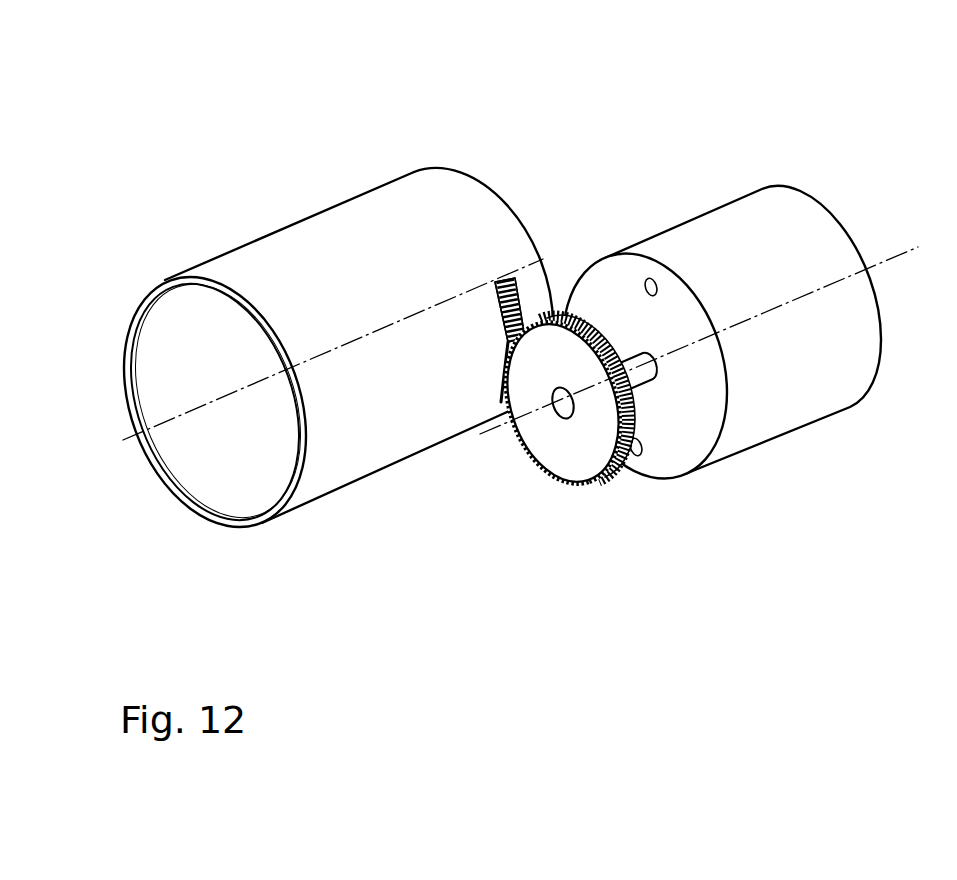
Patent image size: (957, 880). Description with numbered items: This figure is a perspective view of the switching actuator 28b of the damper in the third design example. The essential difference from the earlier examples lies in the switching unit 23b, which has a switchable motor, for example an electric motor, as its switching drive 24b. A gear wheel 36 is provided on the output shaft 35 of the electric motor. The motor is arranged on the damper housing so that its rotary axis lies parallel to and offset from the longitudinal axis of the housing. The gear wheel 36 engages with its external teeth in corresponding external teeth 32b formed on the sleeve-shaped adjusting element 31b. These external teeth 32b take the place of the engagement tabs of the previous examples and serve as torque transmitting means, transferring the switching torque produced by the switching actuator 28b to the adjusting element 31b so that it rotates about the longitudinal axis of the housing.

The switching actuator 28b is at (297, 177).
The adjusting element 31b is at (222, 263).
The external teeth 32b is at (500, 280).
The gear wheel 36 is at (583, 460).
The output shaft 35 is at (633, 383).
The switching drive 24b is at (805, 410).
The switching unit 23b is at (727, 483).